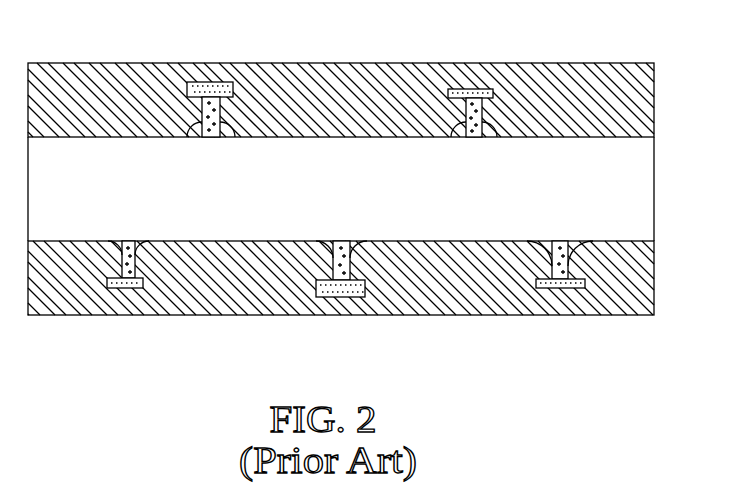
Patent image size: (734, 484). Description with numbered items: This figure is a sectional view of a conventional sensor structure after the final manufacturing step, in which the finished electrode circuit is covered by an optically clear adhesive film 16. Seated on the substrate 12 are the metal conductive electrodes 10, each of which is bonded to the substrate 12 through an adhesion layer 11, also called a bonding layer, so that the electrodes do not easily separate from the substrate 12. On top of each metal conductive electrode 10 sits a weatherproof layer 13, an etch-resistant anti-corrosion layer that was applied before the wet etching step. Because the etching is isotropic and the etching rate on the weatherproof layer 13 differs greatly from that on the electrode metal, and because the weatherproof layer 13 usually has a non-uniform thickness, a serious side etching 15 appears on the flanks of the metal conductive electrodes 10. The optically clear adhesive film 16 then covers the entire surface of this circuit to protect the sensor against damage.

The metal conductive electrode 10 is at (465, 108).
The adhesion layer 11 is at (205, 130).
The substrate 12 is at (637, 210).
The weatherproof layer 13 is at (212, 110).
The side etching 15 is at (597, 265).
The optically clear adhesive film 16 is at (227, 298).